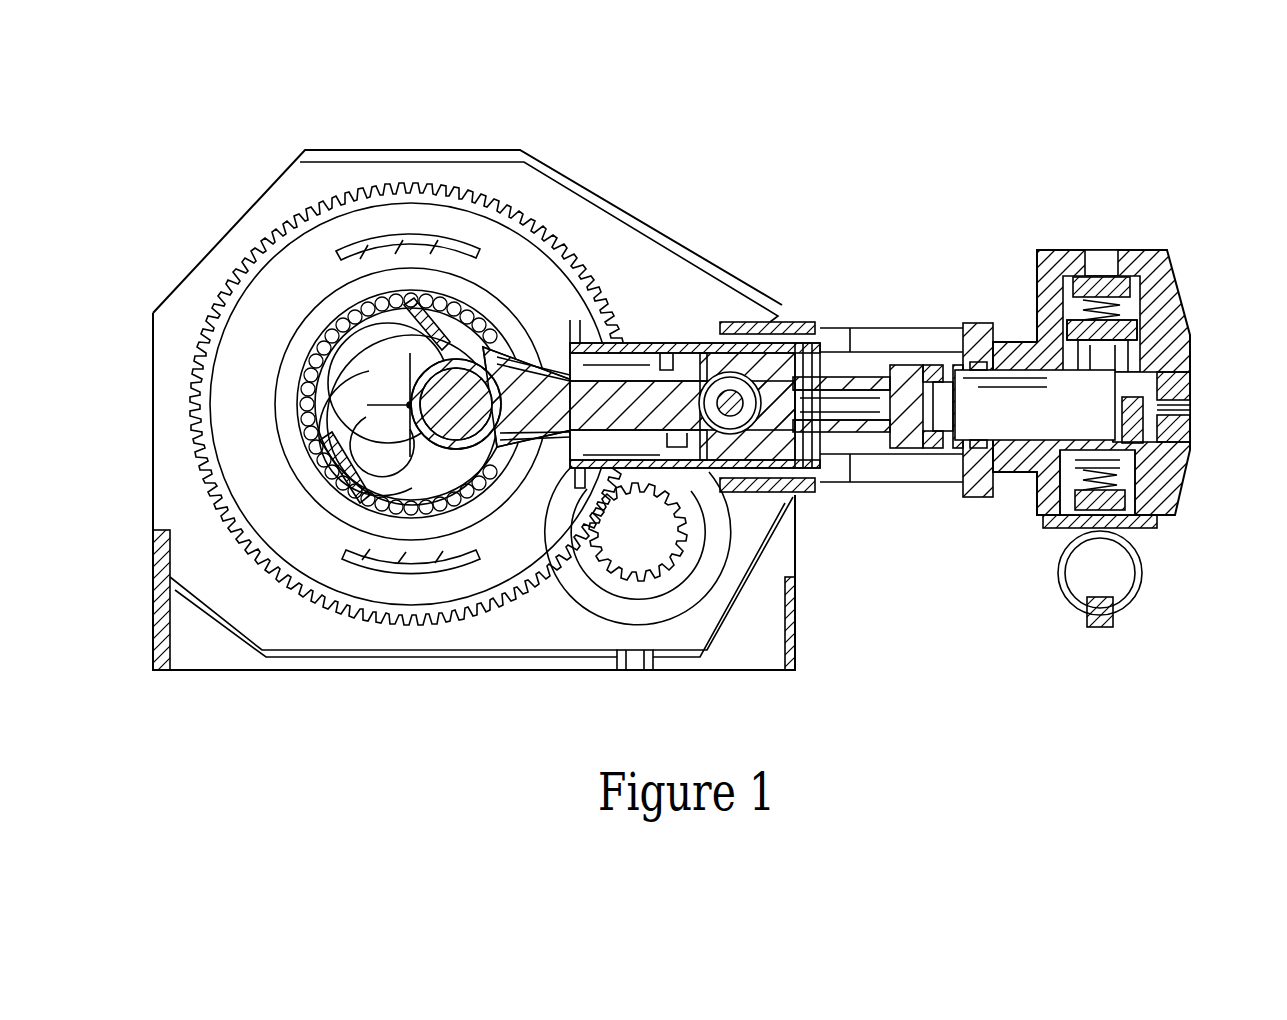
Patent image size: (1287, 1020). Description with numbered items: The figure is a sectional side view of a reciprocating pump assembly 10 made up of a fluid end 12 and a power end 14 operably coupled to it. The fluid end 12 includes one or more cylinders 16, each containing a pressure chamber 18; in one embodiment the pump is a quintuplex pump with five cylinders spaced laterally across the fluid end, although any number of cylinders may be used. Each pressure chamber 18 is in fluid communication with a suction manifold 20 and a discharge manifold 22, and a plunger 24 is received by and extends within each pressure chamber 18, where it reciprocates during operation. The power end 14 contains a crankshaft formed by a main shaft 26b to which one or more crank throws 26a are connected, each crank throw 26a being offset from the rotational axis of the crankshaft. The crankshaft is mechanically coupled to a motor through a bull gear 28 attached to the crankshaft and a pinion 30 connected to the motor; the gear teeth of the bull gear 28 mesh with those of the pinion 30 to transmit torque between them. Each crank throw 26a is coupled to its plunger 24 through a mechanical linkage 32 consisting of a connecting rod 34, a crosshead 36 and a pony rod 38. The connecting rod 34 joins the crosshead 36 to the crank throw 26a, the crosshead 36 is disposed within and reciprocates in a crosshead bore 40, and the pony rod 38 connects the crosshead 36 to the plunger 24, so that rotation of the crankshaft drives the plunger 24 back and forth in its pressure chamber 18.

The reciprocating pump assembly 10 is at (826, 150).
The fluid end 12 is at (1100, 213).
The power end 14 is at (235, 208).
The cylinder 16 is at (1192, 405).
The pressure chamber 18 is at (1125, 373).
The suction manifold 20 is at (1141, 576).
The discharge manifold 22 is at (1150, 320).
The plunger 24 is at (1025, 415).
The crank throw 26a is at (393, 340).
The main shaft 26b is at (385, 373).
The bull gear 28 is at (540, 232).
The pinion 30 is at (670, 540).
The mechanical linkage 32 is at (852, 496).
The connecting rod 34 is at (623, 405).
The crosshead 36 is at (750, 355).
The pony rod 38 is at (905, 395).
The crosshead bore 40 is at (700, 367).